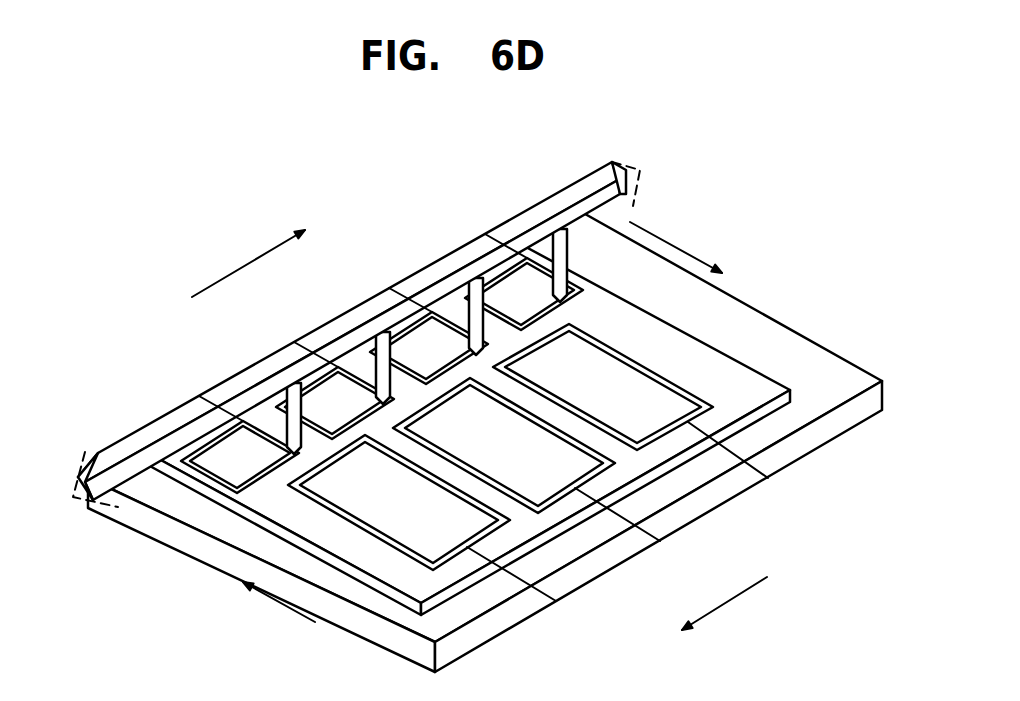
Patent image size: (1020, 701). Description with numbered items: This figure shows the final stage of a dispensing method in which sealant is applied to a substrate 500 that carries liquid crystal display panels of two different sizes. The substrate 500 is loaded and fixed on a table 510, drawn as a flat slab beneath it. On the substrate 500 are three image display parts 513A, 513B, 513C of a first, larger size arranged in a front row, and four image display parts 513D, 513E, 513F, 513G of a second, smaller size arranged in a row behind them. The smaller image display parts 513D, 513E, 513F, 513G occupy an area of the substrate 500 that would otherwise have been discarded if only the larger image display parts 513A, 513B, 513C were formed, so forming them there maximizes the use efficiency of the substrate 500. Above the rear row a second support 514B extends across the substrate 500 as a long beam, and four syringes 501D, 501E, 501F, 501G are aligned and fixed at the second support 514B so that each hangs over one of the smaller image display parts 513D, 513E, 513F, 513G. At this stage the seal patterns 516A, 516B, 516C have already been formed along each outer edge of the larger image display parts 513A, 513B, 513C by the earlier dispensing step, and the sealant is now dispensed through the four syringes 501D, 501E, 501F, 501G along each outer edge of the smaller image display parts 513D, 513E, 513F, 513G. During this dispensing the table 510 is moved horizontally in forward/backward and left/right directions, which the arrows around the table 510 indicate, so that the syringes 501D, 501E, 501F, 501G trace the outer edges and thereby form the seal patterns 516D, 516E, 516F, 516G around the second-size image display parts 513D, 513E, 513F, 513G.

The substrate 500 is at (220, 508).
The table 510 is at (137, 426).
The second support 514B is at (590, 190).
The syringe 501D is at (532, 207).
The syringe 501E is at (440, 259).
The syringe 501F is at (338, 317).
The syringe 501G is at (247, 369).
The image display part 513A is at (620, 392).
The image display part 513B is at (517, 452).
The image display part 513C is at (415, 512).
The image display part 513D is at (538, 302).
The image display part 513E is at (450, 352).
The image display part 513F is at (363, 404).
The image display part 513G is at (273, 457).
The seal pattern 516A is at (757, 486).
The seal pattern 516B is at (647, 543).
The seal pattern 516C is at (548, 603).
The seal pattern 516D is at (485, 234).
The seal pattern 516E is at (389, 288).
The seal pattern 516F is at (294, 342).
The seal pattern 516G is at (199, 396).